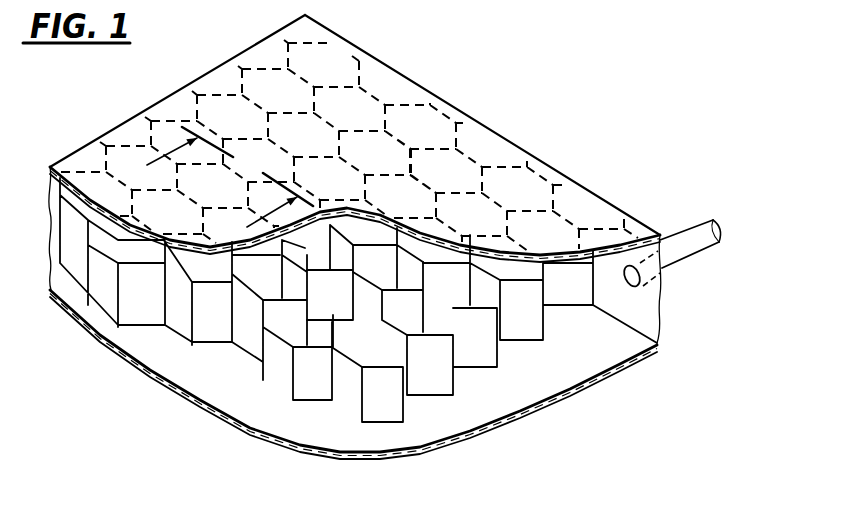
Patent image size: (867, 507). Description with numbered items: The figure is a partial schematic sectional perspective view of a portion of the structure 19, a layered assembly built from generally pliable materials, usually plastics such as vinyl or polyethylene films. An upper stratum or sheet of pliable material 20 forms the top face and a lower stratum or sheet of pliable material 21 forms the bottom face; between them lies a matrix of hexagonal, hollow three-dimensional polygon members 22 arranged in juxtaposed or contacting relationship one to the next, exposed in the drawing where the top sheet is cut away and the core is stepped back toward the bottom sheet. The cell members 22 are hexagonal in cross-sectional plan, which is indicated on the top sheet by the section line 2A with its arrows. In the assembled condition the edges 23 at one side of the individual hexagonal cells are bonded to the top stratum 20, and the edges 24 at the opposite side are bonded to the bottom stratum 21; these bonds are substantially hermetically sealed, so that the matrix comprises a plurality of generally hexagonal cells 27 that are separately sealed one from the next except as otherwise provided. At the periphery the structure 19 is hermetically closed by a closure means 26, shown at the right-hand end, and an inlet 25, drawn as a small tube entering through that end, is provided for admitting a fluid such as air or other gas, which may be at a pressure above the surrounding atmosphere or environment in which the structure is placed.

The structure 19 is at (536, 132).
The upper stratum or sheet of pliable material 20 is at (604, 216).
The lower stratum or sheet of pliable material 21 is at (560, 370).
The hexagonal hollow three-dimensional polygon members 22 is at (262, 370).
The edges 23 is at (207, 250).
The edges 24 is at (298, 388).
The inlet 25 is at (737, 218).
The closure means 26 is at (644, 310).
The hexagonal cells 27 is at (343, 300).
The section line 2A is at (242, 165).